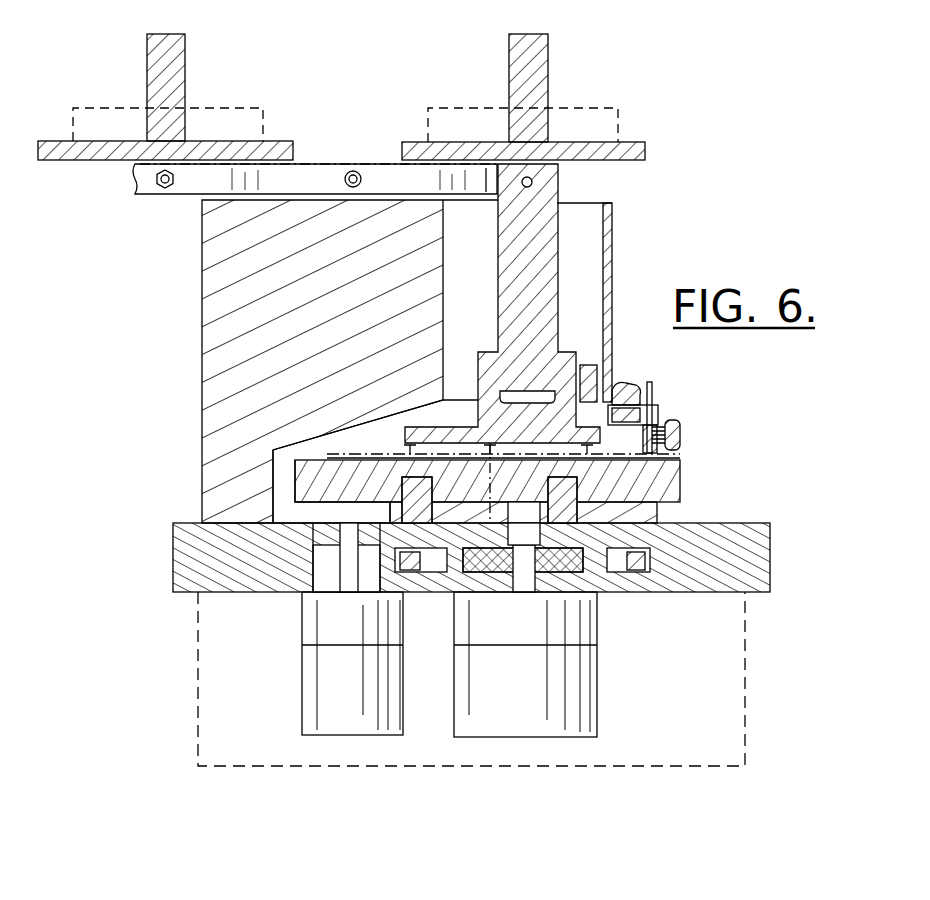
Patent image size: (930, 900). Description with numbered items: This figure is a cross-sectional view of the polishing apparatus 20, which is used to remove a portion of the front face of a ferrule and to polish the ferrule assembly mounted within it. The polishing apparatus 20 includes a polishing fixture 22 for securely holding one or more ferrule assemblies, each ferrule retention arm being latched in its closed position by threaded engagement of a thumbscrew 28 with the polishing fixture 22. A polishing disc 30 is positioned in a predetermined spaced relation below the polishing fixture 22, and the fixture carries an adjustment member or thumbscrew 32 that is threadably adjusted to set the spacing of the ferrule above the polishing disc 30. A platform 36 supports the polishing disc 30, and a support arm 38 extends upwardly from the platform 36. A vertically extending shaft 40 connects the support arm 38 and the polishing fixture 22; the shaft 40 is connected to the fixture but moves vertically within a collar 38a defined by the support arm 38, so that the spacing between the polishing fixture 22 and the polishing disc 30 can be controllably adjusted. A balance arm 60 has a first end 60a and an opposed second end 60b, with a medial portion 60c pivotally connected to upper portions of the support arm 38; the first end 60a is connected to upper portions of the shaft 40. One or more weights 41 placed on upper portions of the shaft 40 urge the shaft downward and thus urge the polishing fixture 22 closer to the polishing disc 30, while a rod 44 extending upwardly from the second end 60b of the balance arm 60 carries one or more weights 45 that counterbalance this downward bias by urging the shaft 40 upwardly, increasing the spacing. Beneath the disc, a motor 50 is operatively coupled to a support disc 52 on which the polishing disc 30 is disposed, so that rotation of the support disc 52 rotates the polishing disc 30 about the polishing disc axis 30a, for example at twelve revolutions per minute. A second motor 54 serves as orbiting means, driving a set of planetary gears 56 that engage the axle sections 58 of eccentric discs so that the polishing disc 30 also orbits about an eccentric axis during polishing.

The polishing apparatus 20 is at (644, 260).
The polishing fixture 22 is at (636, 447).
The thumbscrew 28 is at (674, 430).
The polishing disc 30 is at (668, 492).
The polishing disc axis 30a is at (486, 486).
The thumbscrew 32 is at (622, 388).
The platform 36 is at (752, 557).
The support arm 38 is at (214, 281).
The collar 38a is at (610, 318).
The shaft 40 is at (534, 264).
The weights 41 is at (618, 128).
The rod 44 is at (178, 66).
The weights 45 is at (223, 108).
The motor 50 is at (312, 672).
The support disc 52 is at (400, 508).
The motor 54 is at (585, 660).
The planetary gears 56 is at (503, 562).
The axle sections 58 is at (450, 557).
The balance arm 60 is at (313, 177).
The first end 60a is at (488, 180).
The second end 60b is at (165, 190).
The medial portion 60c is at (353, 176).